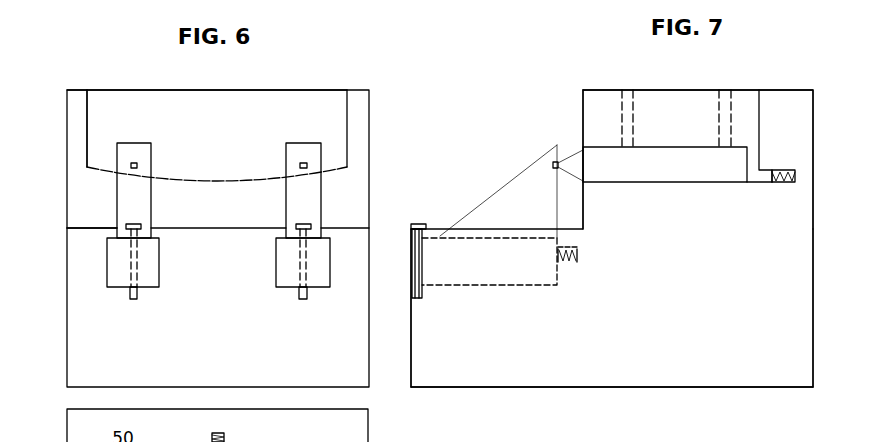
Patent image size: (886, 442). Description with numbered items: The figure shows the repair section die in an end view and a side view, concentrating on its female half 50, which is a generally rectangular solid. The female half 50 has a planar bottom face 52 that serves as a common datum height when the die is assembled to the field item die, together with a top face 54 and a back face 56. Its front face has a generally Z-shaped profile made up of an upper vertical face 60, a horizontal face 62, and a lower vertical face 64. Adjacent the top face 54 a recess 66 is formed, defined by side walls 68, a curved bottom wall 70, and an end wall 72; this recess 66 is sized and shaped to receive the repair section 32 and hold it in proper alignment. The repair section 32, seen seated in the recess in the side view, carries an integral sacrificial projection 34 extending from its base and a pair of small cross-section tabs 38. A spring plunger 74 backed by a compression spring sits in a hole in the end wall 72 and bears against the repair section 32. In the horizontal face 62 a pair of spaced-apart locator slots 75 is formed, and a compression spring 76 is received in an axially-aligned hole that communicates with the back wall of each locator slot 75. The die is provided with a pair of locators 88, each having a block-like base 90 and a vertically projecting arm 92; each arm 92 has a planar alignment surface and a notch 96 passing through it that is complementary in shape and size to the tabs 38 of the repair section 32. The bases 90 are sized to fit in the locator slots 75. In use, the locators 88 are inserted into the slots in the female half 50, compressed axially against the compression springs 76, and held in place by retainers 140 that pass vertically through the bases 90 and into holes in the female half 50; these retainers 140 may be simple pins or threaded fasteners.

In FIG. 7, the repair section 32 is at (657, 177).
In FIG. 7, the sacrificial projection 34 is at (583, 155).
In FIG. 7, the tabs 38 is at (552, 163).
In FIG. 6, the female half 50 is at (205, 332).
In FIG. 7, the female half 50 is at (697, 307).
In FIG. 7, the bottom face 52 is at (663, 387).
In FIG. 7, the top face 54 is at (767, 90).
In FIG. 7, the back face 56 is at (812, 302).
In FIG. 7, the upper vertical face 60 is at (584, 107).
In FIG. 6, the horizontal face 62 is at (362, 230).
In FIG. 7, the lower vertical face 64 is at (410, 367).
In FIG. 6, the recess 66 is at (259, 101).
In FIG. 6, the side walls 68 is at (88, 114).
In FIG. 6, the curved bottom wall 70 is at (203, 180).
In FIG. 6, the end wall 72 is at (148, 122).
In FIG. 7, the spring plunger 74 is at (761, 169).
In FIG. 6, the locator slots 75 is at (107, 277).
In FIG. 7, the locator slots 75 is at (502, 285).
In FIG. 7, the compression spring 76 is at (570, 263).
In FIG. 6, the locators 88 is at (333, 199).
In FIG. 7, the base 90 is at (467, 272).
In FIG. 7, the arm 92 is at (478, 200).
In FIG. 6, the notch 96 is at (131, 163).
In FIG. 6, the retainers 140 is at (130, 290).